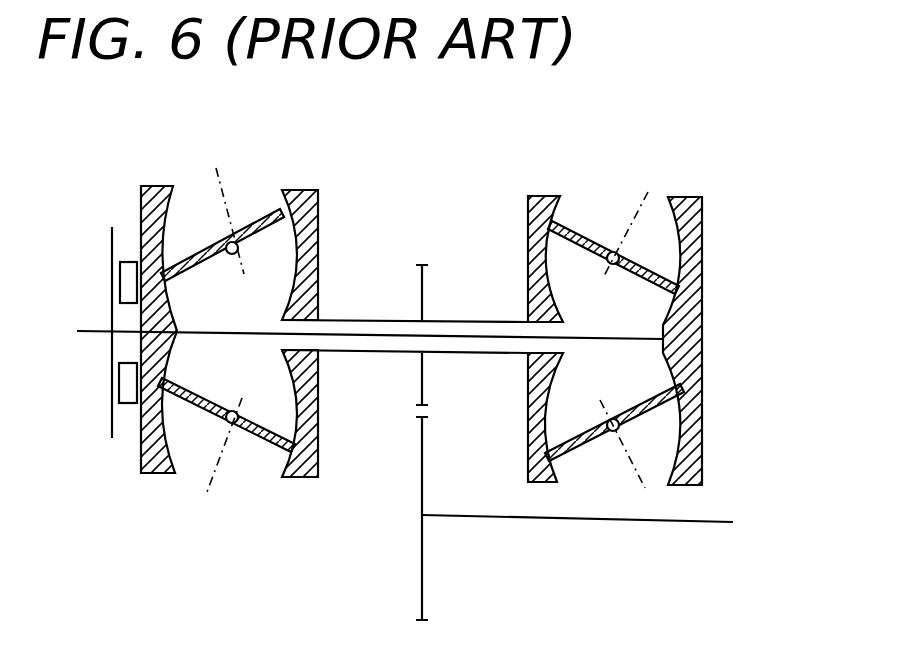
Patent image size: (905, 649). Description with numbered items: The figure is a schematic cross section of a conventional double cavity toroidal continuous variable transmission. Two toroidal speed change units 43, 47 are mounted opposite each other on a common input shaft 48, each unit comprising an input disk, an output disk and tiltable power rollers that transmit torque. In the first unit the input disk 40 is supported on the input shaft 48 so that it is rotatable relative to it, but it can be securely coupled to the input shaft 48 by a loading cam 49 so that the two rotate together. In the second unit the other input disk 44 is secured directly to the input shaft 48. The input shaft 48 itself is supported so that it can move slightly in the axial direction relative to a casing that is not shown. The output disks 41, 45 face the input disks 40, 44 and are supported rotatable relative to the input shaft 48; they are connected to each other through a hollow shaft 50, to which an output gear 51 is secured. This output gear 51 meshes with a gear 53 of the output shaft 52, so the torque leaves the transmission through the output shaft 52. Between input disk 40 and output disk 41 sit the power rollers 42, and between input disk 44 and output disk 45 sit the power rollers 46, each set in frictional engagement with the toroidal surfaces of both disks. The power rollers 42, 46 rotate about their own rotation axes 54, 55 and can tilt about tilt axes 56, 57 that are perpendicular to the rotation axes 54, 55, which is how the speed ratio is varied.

The input disk 40 is at (141, 200).
The output disk 41 is at (321, 201).
The power rollers 42 is at (263, 224).
The toroidal speed change unit 43 is at (240, 182).
The input disk 44 is at (699, 236).
The output disk 45 is at (528, 233).
The power rollers 46 is at (585, 237).
The toroidal speed change unit 47 is at (603, 192).
The input shaft 48 is at (98, 333).
The loading cam 49 is at (127, 285).
The hollow shaft 50 is at (367, 320).
The output gear 51 is at (424, 380).
The output shaft 52 is at (572, 521).
The gear 53 is at (420, 568).
The rotation axis 54 is at (210, 203).
The rotation axis 55 is at (632, 223).
The tilt axis 56 is at (228, 256).
The tilt axis 57 is at (614, 268).